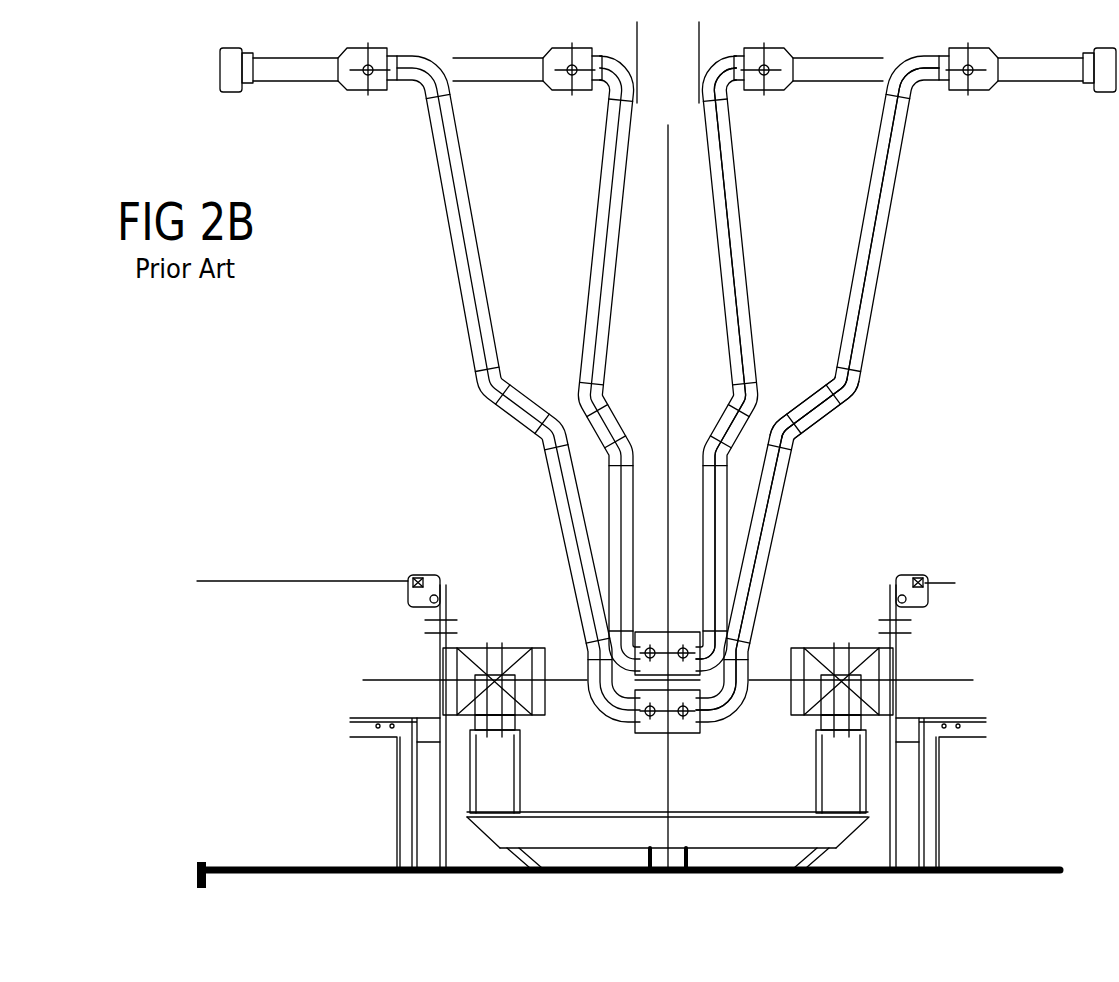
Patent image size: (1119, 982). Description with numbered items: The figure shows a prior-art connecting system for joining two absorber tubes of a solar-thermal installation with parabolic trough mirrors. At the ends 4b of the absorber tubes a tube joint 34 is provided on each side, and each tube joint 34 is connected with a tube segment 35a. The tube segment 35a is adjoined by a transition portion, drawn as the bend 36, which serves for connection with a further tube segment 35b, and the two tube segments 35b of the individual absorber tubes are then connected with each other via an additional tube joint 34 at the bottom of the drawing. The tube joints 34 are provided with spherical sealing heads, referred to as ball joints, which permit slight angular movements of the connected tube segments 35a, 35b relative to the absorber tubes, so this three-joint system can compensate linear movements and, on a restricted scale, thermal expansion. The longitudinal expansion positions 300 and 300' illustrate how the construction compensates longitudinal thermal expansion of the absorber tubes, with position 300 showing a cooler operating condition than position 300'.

The end of absorber tube 4b is at (273, 78).
The tube joint 34 is at (556, 92).
The tube segment 35a is at (602, 248).
The further tube segment 35b is at (613, 594).
The pipe bend 36 is at (815, 418).
The longitudinal expansion position 300 is at (830, 389).
The longitudinal expansion position 300' is at (771, 363).